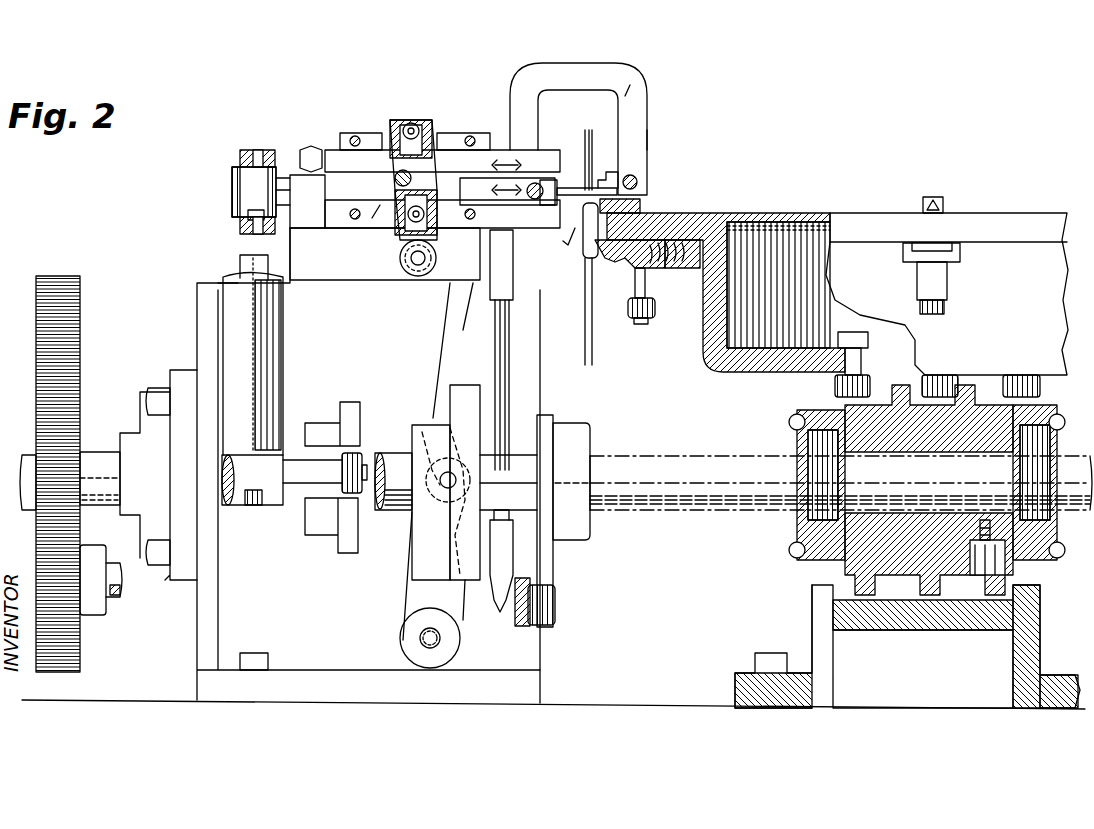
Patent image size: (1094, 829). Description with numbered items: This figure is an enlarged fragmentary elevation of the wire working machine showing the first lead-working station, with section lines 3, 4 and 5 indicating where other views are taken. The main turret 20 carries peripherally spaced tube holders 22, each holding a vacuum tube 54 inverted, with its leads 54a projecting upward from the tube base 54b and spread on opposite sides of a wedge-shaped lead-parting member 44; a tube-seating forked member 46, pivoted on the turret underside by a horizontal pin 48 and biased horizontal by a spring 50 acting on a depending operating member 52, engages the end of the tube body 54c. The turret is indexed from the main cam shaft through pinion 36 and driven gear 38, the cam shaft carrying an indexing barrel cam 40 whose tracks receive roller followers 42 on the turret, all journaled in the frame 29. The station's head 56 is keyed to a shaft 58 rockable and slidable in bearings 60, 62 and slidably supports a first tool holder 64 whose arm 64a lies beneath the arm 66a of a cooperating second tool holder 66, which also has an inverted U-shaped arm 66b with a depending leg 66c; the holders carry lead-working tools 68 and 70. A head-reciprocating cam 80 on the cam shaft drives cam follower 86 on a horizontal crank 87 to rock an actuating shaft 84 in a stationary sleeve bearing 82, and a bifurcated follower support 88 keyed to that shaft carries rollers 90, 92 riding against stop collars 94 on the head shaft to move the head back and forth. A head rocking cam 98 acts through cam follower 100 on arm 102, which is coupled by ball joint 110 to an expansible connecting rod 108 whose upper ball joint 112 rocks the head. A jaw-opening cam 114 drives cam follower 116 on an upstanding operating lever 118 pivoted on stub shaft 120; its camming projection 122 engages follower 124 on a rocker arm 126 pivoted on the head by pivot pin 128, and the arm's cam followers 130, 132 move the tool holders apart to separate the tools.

The section line 3- 3 is at (658, 88).
The section line 4- 4 is at (409, 135).
The section line 5- 5 is at (258, 160).
The main turret 20 is at (710, 379).
The tube holder 22 is at (625, 308).
The frame 29 is at (218, 615).
The pinion 36 is at (95, 593).
The driven gear 38 is at (80, 335).
The indexing barrel cam 40 is at (830, 562).
The roller follower 42 is at (940, 378).
The lead-parting member 44 is at (640, 205).
The tube-seating forked member 46 is at (623, 283).
The horizontal pin 48 is at (645, 270).
The spring 50 is at (683, 268).
The operating member 52 is at (640, 325).
The vacuum tube 54 is at (575, 245).
The leads 54a is at (585, 135).
The tube base 54b is at (583, 215).
The tube body 54c is at (569, 278).
The head 56 is at (350, 133).
The shaft 58 is at (330, 228).
The bearing 60 is at (300, 178).
The bearing 62 is at (575, 222).
The first tool holder 64 is at (372, 205).
The arm 64a is at (385, 222).
The second tool holder 66 is at (650, 118).
The arm 66a is at (335, 152).
The inverted U-shaped arm 66b is at (632, 83).
The depending leg 66c is at (648, 140).
The lead-working tool 68 is at (570, 185).
The lead-working tool 70 is at (608, 175).
The head-reciprocating cam 80 is at (343, 553).
The sleeve bearing 82 is at (270, 345).
The actuating shaft 84 is at (243, 268).
The cam follower 86 is at (355, 455).
The horizontal crank 87 is at (294, 470).
The bifurcated follower support 88 is at (245, 235).
The roller 90 is at (250, 165).
The roller 92 is at (248, 220).
The stop collar 94 is at (236, 185).
The head rocking cam 98 is at (548, 560).
The cam follower 100 is at (548, 595).
The arm 102 is at (522, 628).
The expansible connecting rod 108 is at (505, 397).
The ball joint 110 is at (494, 610).
The ball joint 112 is at (507, 282).
The jaw-opening cam 114 is at (445, 567).
The cam follower 116 is at (473, 482).
The operating lever 118 is at (432, 352).
The stub shaft 120 is at (420, 637).
The camming projection 122 is at (440, 290).
The follower 124 is at (410, 266).
The rocker arm 126 is at (440, 135).
The pivot pin 128 is at (395, 178).
The cam follower 130 is at (422, 215).
The cam follower 132 is at (411, 128).